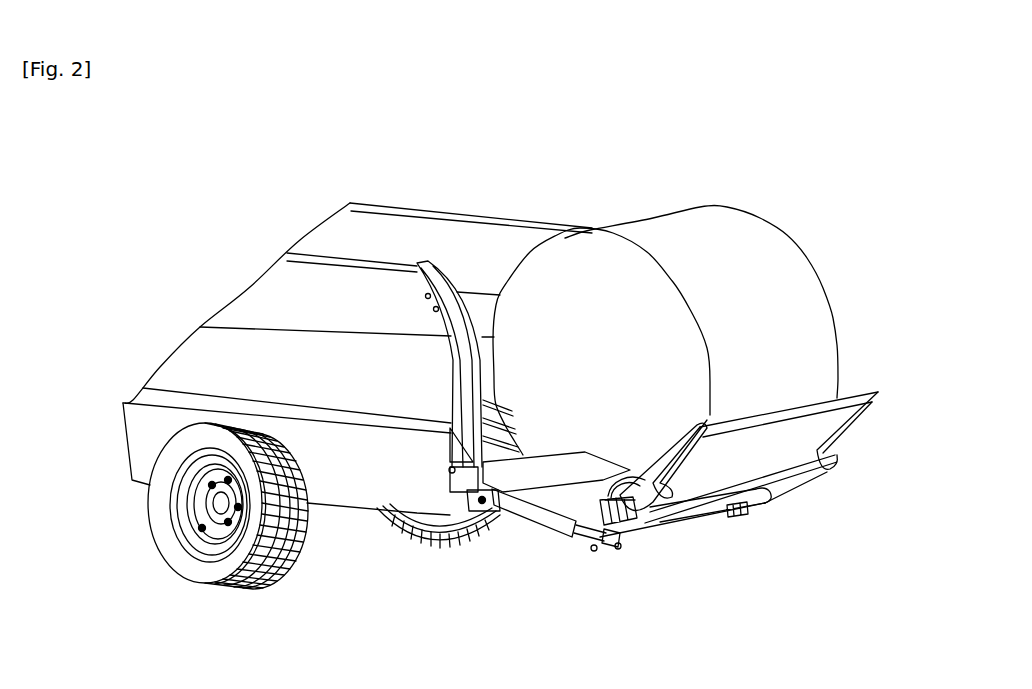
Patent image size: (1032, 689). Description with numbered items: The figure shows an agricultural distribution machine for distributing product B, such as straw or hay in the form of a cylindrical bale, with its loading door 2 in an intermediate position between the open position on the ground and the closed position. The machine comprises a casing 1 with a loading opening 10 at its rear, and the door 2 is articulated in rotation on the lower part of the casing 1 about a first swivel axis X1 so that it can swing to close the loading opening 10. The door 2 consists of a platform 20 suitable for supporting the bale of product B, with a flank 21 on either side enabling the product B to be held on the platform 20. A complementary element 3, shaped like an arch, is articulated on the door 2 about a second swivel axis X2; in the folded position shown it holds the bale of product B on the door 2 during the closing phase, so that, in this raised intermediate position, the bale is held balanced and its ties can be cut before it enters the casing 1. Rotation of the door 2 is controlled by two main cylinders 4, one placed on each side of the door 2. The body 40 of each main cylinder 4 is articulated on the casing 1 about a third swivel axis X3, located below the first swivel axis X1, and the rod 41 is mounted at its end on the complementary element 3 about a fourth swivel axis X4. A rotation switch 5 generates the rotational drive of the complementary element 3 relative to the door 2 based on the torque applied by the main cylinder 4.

The casing 1 is at (203, 360).
The loading door 2 is at (686, 530).
The complementary element 3 is at (880, 382).
The main cylinder 4 is at (623, 583).
The rotation switch 5 is at (637, 462).
The loading opening 10 is at (490, 262).
The platform 20 is at (758, 500).
The flank 21 is at (567, 473).
The body 40 is at (523, 530).
The rod 41 is at (585, 537).
The product B is at (802, 320).
The first swivel axis X1 is at (448, 465).
The second swivel axis X2 is at (618, 548).
The third swivel axis X3 is at (480, 533).
The fourth swivel axis X4 is at (594, 550).